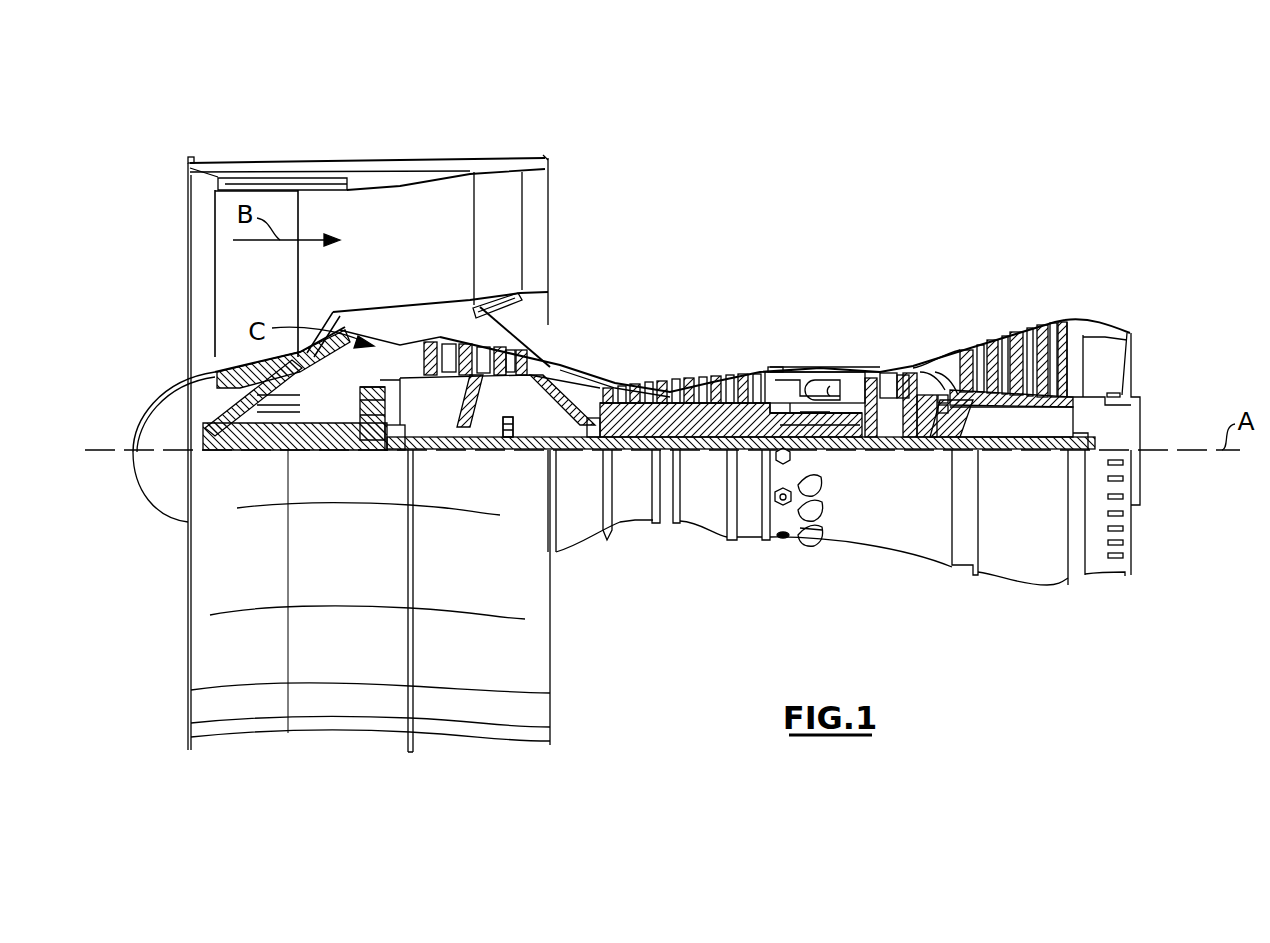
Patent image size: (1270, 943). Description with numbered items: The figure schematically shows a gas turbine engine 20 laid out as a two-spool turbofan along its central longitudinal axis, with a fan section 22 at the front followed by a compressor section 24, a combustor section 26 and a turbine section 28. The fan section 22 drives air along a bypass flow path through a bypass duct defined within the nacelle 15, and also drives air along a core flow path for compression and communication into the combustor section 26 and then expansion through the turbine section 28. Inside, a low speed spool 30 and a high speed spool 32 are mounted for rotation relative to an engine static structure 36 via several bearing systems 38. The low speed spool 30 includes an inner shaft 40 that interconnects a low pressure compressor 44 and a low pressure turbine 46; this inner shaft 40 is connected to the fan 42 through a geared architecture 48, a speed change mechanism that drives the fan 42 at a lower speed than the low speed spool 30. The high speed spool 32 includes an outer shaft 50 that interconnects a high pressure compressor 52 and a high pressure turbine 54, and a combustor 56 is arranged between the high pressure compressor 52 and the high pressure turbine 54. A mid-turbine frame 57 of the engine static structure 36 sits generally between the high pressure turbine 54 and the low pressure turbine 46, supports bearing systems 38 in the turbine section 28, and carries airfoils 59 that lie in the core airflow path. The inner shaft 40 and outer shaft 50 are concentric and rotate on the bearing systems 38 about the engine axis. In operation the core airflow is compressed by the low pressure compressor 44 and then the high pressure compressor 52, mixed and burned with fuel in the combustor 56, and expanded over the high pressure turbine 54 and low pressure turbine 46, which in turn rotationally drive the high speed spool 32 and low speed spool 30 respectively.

The nacelle 15 is at (372, 162).
The gas turbine engine 20 is at (833, 212).
The fan section 22 is at (297, 152).
The compressor section 24 is at (601, 348).
The combustor section 26 is at (822, 337).
The turbine section 28 is at (974, 302).
The low speed spool 30 is at (706, 462).
The high speed spool 32 is at (748, 420).
The engine static structure 36 is at (748, 548).
The bearing systems 38 is at (510, 422).
The inner shaft 40 is at (572, 453).
The fan 42 is at (272, 296).
The low pressure compressor 44 is at (465, 358).
The low pressure turbine 46 is at (1015, 337).
The geared architecture 48 is at (373, 432).
The outer shaft 50 is at (828, 425).
The high pressure compressor 52 is at (672, 392).
The high pressure turbine 54 is at (889, 385).
The combustor 56 is at (826, 390).
The mid-turbine frame 57 is at (936, 347).
The airfoils 59 is at (962, 414).